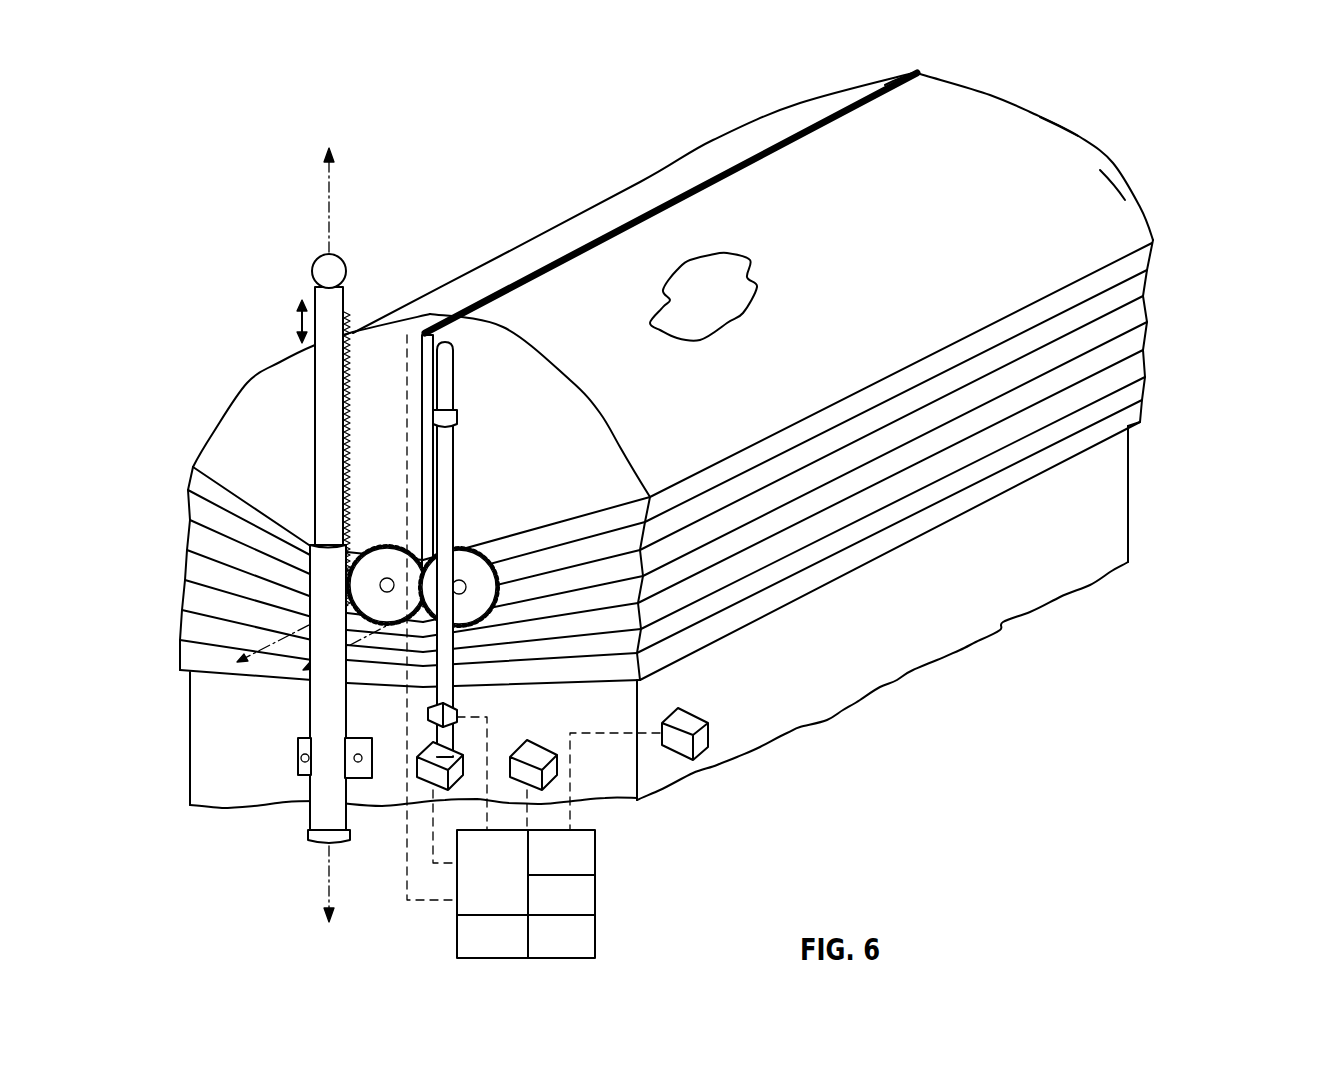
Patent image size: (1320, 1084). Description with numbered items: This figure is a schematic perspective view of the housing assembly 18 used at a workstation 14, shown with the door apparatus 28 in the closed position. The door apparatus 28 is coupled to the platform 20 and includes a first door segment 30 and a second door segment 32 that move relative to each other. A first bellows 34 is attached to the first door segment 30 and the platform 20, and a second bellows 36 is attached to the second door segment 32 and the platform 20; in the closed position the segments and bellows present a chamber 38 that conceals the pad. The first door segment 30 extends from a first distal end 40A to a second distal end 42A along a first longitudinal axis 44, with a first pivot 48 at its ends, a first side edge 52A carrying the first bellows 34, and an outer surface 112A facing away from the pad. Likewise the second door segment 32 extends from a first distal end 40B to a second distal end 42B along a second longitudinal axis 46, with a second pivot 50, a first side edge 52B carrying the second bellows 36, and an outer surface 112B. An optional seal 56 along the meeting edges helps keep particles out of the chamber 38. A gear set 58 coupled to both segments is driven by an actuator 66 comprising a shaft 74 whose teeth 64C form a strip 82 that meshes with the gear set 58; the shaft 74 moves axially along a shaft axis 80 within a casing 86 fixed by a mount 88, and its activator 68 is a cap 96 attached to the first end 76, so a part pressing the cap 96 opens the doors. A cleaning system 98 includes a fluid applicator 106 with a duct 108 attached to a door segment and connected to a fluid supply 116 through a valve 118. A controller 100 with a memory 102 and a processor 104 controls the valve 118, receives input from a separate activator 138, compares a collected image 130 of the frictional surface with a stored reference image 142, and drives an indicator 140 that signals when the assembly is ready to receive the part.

The workstation 14 is at (1225, 120).
The housing assembly 18 is at (420, 213).
The platform 20 is at (1120, 495).
The door apparatus 28 is at (1185, 252).
The first door segment 30 is at (990, 100).
The second door segment 32 is at (610, 197).
The first bellows 34 is at (1147, 332).
The second bellows 36 is at (186, 668).
The chamber 38 is at (727, 265).
The first distal end of the first door segment 40A is at (600, 437).
The first distal end of the second door segment 40B is at (237, 445).
The second distal end of the first door segment 42A is at (1078, 132).
The second distal end of the second door segment 42B is at (885, 72).
The first longitudinal axis 44 is at (345, 677).
The second longitudinal axis 46 is at (248, 664).
The first pivot 48 is at (463, 587).
The second pivot 50 is at (382, 567).
The first side edge of the first door segment 52A is at (883, 375).
The first side edge of the second door segment 52B is at (220, 487).
The seal 56 is at (788, 137).
The gear set 58 is at (507, 622).
The teeth of the shaft 64C is at (430, 328).
The actuator 66 is at (383, 270).
The activator 68 is at (303, 240).
The shaft 74 is at (337, 298).
The first end of the shaft 76 is at (313, 282).
The shaft axis 80 is at (327, 197).
The strip of teeth 82 is at (430, 328).
The casing 86 is at (307, 818).
The mount 88 is at (298, 757).
The cap 96 is at (313, 275).
The cleaning system 98 is at (497, 733).
The controller 100 is at (566, 894).
The memory 102 is at (581, 867).
The processor 104 is at (581, 907).
The fluid applicator 106 is at (497, 733).
The duct 108 is at (447, 455).
The outer surface of the first door segment 112A is at (1107, 205).
The outer surface of the second door segment 112B is at (717, 150).
The fluid supply 116 is at (433, 773).
The valve 118 is at (447, 715).
The image 130 is at (581, 951).
The separate activator 138 is at (560, 773).
The indicator 140 is at (710, 735).
The reference image 142 is at (514, 951).